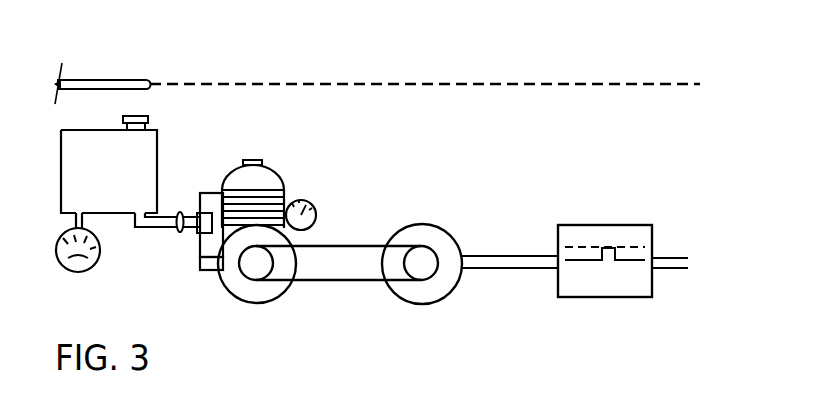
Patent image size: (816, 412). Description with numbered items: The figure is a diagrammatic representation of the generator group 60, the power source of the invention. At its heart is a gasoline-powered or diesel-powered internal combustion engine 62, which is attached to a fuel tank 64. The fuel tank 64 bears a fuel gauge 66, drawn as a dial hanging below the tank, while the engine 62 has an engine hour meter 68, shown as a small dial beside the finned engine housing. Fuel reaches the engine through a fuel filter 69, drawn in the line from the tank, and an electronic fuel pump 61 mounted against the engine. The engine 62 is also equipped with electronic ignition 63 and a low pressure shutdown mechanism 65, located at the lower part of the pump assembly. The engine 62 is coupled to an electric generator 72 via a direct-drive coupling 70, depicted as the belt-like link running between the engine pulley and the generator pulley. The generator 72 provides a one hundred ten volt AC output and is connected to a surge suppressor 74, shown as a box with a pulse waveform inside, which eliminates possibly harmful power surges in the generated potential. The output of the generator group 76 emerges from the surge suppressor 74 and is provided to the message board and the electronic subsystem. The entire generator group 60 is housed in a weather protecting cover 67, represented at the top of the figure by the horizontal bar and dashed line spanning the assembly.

The generator group 60 is at (549, 77).
The electronic fuel pump 61 is at (197, 215).
The internal combustion engine 62 is at (226, 282).
The electronic ignition 63 is at (205, 193).
The fuel tank 64 is at (158, 141).
The low pressure shutdown mechanism 65 is at (200, 263).
The fuel gauge 66 is at (100, 249).
The weather protecting cover 67 is at (133, 79).
The engine hour meter 68 is at (314, 208).
The fuel filter 69 is at (177, 233).
The direct-drive coupling 70 is at (354, 245).
The electric generator 72 is at (443, 239).
The surge suppressor 74 is at (605, 225).
The output of the generator group 76 is at (674, 258).